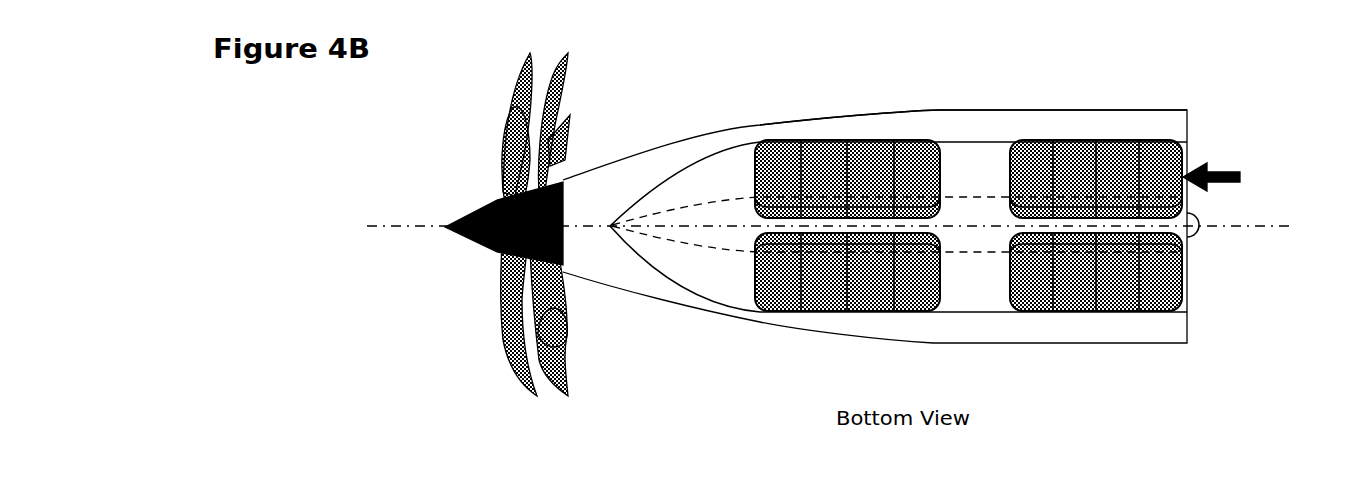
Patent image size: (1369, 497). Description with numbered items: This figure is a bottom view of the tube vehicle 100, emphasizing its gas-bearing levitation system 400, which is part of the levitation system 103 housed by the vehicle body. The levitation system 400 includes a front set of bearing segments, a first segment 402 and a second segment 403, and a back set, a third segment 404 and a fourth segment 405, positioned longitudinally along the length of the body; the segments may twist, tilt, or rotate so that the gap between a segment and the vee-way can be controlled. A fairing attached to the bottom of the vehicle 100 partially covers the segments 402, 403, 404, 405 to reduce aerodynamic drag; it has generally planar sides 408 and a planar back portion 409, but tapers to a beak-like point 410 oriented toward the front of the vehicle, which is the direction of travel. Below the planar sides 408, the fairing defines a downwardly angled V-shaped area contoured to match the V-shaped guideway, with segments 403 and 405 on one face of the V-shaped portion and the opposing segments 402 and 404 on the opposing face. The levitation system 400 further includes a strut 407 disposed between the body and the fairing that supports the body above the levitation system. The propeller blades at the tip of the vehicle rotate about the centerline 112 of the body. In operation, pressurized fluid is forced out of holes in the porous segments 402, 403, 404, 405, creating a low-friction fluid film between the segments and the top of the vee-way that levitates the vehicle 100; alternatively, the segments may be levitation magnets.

The tube vehicle 100 is at (1172, 103).
The levitation system 103 is at (970, 128).
The centerline 112 is at (1234, 232).
The gas-bearing levitation system 400 is at (1244, 179).
The first segment 402 is at (776, 320).
The second segment 403 is at (826, 150).
The third segment 404 is at (1158, 318).
The fourth segment 405 is at (1111, 150).
The strut 407 is at (685, 255).
The planar sides 408 is at (683, 152).
The planar back portion 409 is at (1195, 153).
The beak-like point 410 is at (611, 216).